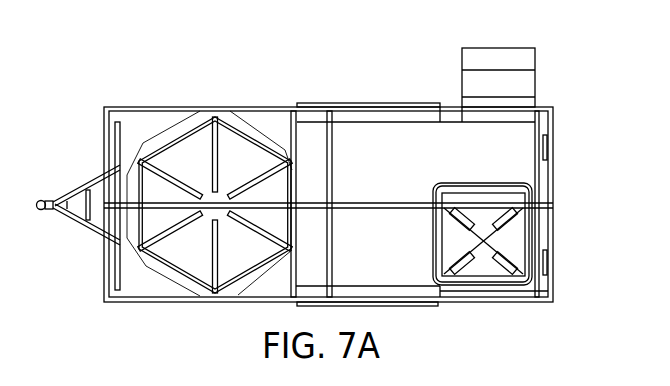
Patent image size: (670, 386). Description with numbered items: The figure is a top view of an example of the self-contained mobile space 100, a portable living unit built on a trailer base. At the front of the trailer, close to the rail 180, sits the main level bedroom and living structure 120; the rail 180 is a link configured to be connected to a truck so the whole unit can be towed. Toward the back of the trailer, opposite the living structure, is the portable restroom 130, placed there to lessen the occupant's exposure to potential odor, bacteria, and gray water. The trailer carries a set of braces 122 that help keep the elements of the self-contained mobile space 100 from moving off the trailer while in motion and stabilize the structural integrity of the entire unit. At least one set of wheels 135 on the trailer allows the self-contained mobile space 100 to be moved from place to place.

The self-contained mobile space 100 is at (600, 32).
The main level bedroom and living structure 120 is at (195, 142).
The braces 122 is at (335, 155).
The portable restroom 130 is at (522, 233).
The set of wheels 135 is at (393, 103).
The rail 180 is at (55, 200).